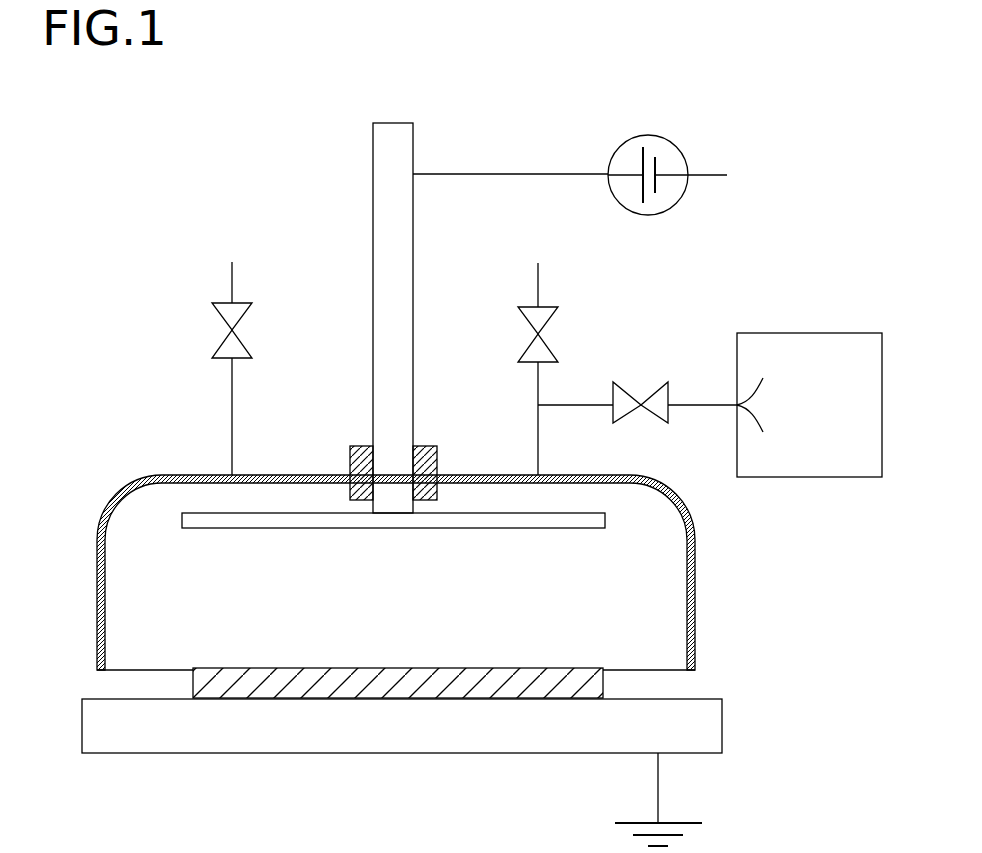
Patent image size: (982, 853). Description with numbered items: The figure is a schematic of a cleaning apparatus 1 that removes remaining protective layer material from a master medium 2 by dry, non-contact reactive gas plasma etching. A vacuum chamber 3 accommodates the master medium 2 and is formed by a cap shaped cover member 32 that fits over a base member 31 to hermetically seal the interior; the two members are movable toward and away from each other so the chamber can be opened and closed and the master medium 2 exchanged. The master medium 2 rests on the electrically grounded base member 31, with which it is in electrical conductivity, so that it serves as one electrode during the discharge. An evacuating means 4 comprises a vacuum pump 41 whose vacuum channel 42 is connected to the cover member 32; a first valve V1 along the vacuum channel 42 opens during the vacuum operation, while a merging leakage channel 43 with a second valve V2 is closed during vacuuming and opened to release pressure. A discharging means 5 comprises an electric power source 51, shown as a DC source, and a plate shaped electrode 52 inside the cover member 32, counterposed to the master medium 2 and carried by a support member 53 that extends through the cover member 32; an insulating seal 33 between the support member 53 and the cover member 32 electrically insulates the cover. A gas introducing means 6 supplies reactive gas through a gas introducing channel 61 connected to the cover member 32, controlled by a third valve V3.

The cleaning apparatus 1 is at (226, 115).
The master medium 2 is at (448, 670).
The vacuum chamber 3 is at (95, 505).
The base member 31 is at (385, 740).
The cover member 32 is at (695, 590).
The insulating seal 33 is at (350, 452).
The evacuating means 4 is at (813, 322).
The vacuum pump 41 is at (806, 468).
The vacuum channel 42 is at (583, 407).
The leakage channel 43 is at (536, 282).
The discharging means 5 is at (690, 143).
The electric power source 51 is at (620, 148).
The plate shaped electrode 52 is at (318, 530).
The support member 53 is at (408, 383).
The gas introducing means 6 is at (190, 314).
The gas introducing channel 61 is at (228, 412).
The first valve V1 is at (645, 387).
The second valve V2 is at (559, 334).
The third valve V3 is at (252, 330).